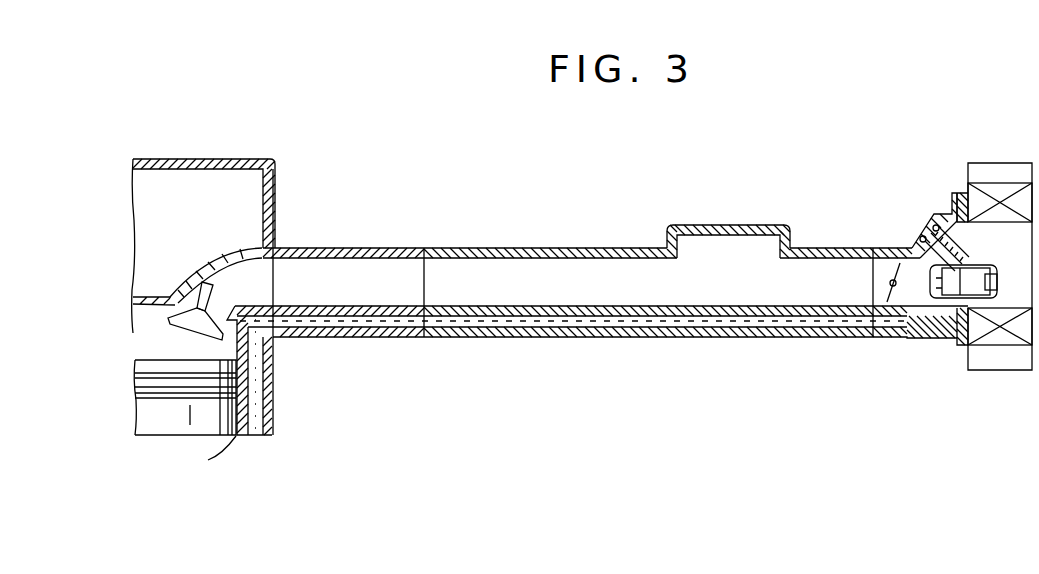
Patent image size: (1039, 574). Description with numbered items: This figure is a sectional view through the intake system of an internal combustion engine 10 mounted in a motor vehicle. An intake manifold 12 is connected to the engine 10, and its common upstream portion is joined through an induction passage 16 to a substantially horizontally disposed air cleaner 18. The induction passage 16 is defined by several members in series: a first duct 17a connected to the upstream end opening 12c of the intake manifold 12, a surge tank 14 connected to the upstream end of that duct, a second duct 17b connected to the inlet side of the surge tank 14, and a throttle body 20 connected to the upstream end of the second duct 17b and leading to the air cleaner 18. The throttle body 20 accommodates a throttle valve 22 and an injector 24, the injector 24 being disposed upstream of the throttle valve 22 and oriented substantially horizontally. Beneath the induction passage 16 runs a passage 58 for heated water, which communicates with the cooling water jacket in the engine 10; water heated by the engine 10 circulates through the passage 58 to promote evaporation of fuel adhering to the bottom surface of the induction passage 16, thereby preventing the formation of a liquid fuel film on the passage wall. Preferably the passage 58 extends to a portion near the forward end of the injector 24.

The internal combustion engine 10 is at (184, 158).
The intake manifold 12 is at (356, 248).
The upstream end opening 12c is at (424, 285).
The surge tank 14 is at (722, 225).
The induction passage 16 is at (585, 268).
The first duct 17a is at (530, 248).
The second duct 17b is at (820, 248).
The air cleaner 18 is at (1000, 163).
The throttle body 20 is at (918, 228).
The throttle valve 22 is at (891, 330).
The injector 24 is at (950, 283).
The passage for heated water 58 is at (635, 325).